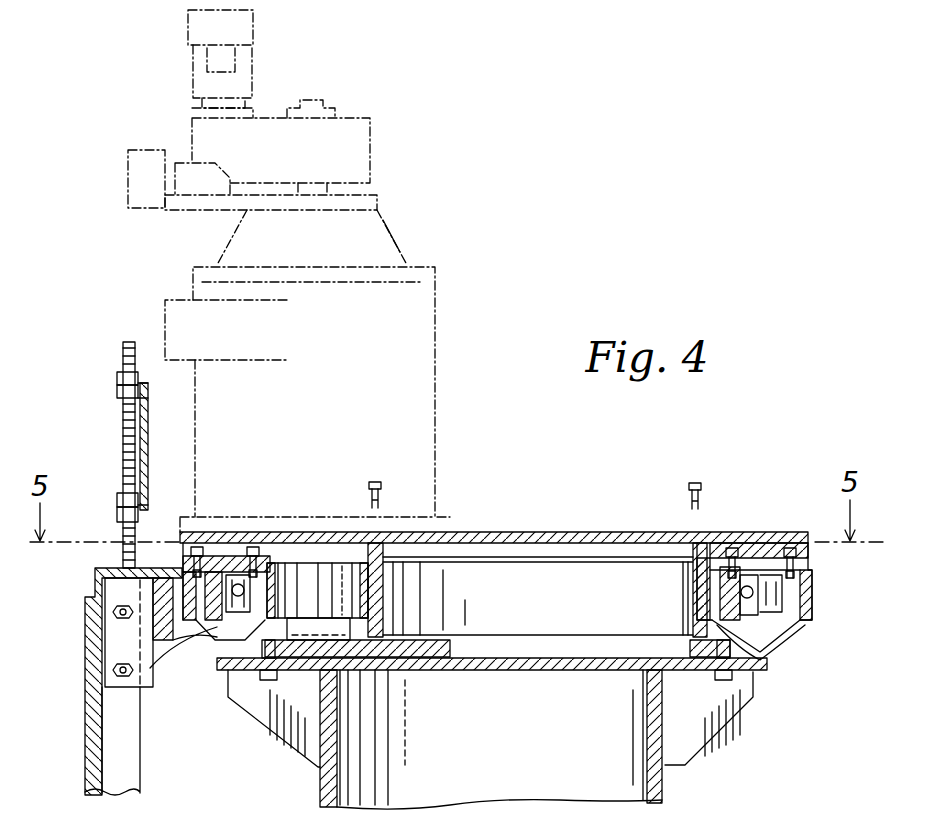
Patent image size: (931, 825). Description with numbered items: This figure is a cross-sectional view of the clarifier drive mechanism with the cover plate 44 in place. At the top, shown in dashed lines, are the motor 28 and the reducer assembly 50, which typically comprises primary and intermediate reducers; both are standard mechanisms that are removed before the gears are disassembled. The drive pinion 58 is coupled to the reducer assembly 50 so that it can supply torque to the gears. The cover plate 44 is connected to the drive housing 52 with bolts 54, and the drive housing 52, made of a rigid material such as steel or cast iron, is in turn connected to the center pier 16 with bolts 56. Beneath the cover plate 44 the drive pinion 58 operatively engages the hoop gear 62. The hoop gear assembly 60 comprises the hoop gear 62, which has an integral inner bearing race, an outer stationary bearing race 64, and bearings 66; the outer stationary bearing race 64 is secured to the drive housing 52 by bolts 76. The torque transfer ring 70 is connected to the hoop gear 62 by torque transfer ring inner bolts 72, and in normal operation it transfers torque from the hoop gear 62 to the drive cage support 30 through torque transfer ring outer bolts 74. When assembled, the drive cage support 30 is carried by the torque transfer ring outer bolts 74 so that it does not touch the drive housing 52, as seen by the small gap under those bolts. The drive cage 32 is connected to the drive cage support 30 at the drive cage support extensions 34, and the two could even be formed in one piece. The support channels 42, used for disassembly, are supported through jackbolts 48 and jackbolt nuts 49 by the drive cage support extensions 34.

The center pier 16 is at (322, 792).
The motor 28 is at (255, 67).
The drive cage support 30 is at (812, 612).
The drive cage 32 is at (142, 775).
The drive cage support extensions 34 is at (97, 572).
The support channels 42 is at (148, 397).
The cover plate 44 is at (515, 530).
The jackbolts 48 is at (125, 342).
The jackbolt nuts 49 is at (117, 397).
The reducer assembly 50 is at (395, 243).
The drive housing 52 is at (760, 653).
The bolts 54 is at (688, 498).
The bolts 56 is at (730, 673).
The drive pinion 58 is at (322, 560).
The hoop gear assembly 60 is at (272, 565).
The hoop gear 62 is at (732, 603).
The outer stationary bearing race 64 is at (757, 558).
The bearings 66 is at (743, 593).
The torque transfer ring 70 is at (743, 550).
The torque transfer ring inner bolts 72 is at (728, 550).
The torque transfer ring outer bolts 74 is at (787, 553).
The bolts 76 is at (780, 627).